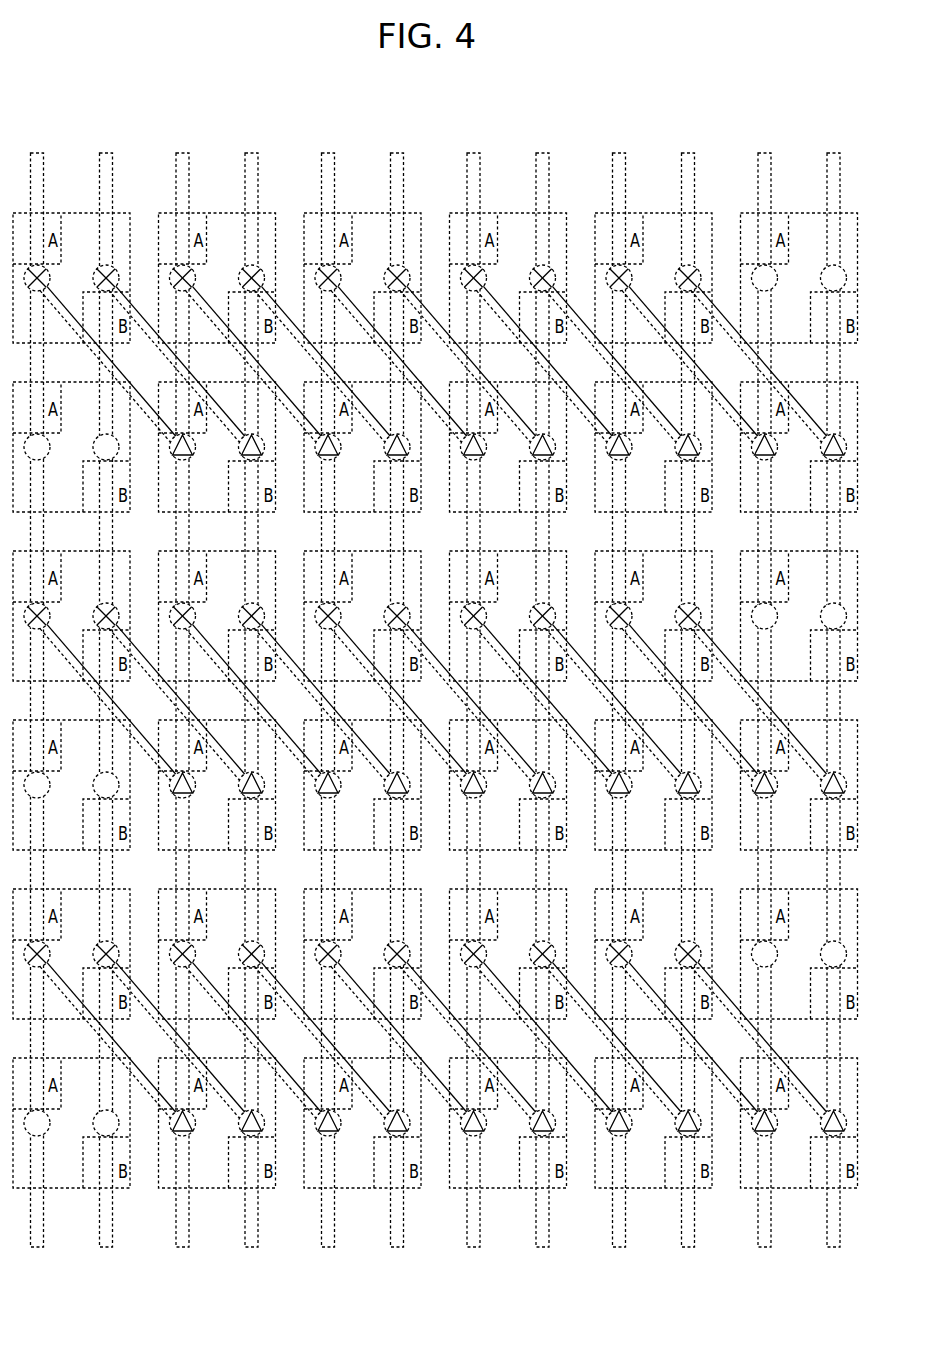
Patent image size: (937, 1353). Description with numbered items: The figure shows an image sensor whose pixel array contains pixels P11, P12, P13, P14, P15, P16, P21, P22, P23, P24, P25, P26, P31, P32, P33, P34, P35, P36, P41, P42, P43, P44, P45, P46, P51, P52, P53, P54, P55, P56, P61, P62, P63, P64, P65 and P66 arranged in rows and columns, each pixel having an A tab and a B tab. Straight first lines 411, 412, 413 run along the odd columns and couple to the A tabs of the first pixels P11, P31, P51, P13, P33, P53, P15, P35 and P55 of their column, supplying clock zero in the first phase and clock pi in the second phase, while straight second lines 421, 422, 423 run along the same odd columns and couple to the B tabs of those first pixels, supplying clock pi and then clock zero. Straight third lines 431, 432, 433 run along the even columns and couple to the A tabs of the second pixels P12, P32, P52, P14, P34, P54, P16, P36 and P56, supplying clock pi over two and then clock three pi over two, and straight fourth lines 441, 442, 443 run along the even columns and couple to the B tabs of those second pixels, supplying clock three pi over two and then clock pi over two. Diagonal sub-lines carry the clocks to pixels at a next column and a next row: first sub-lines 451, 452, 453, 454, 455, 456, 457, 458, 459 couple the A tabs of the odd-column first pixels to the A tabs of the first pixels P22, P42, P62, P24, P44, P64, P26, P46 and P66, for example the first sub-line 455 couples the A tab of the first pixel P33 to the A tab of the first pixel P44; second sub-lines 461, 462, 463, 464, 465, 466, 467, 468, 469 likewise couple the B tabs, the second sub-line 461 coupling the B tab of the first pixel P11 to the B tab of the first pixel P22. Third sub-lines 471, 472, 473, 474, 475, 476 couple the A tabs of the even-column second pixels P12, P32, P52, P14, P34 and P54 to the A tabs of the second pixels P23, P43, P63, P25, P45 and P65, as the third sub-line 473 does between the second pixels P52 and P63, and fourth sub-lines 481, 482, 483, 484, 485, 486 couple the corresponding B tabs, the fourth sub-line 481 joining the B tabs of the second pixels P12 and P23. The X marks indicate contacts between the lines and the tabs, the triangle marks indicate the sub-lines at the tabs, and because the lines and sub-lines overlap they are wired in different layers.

The first line 411 is at (37, 153).
The first line 412 is at (328, 153).
The first line 413 is at (619, 153).
The second line 421 is at (106, 153).
The second line 422 is at (397, 153).
The second line 423 is at (688, 153).
The third line 431 is at (182, 153).
The third line 432 is at (474, 153).
The third line 433 is at (764, 153).
The fourth line 441 is at (252, 153).
The fourth line 442 is at (542, 153).
The fourth line 443 is at (834, 153).
The first sub-line 451 is at (108, 347).
The first sub-line 452 is at (108, 685).
The first sub-line 453 is at (108, 1023).
The first sub-line 454 is at (399, 347).
The first sub-line 455 is at (399, 685).
The first sub-line 456 is at (399, 1023).
The first sub-line 457 is at (690, 347).
The first sub-line 458 is at (690, 685).
The first sub-line 459 is at (690, 1023).
The second sub-line 461 is at (177, 347).
The second sub-line 462 is at (177, 685).
The second sub-line 463 is at (177, 1023).
The second sub-line 464 is at (468, 347).
The second sub-line 465 is at (468, 685).
The second sub-line 466 is at (468, 1023).
The second sub-line 467 is at (759, 347).
The second sub-line 468 is at (759, 685).
The second sub-line 469 is at (759, 1023).
The third sub-line 471 is at (254, 347).
The third sub-line 472 is at (254, 685).
The third sub-line 473 is at (254, 1023).
The third sub-line 474 is at (545, 347).
The third sub-line 475 is at (545, 685).
The third sub-line 476 is at (545, 1023).
The fourth sub-line 481 is at (323, 347).
The fourth sub-line 482 is at (323, 685).
The fourth sub-line 483 is at (323, 1023).
The fourth sub-line 484 is at (614, 347).
The fourth sub-line 485 is at (614, 685).
The fourth sub-line 486 is at (614, 1023).
The first pixel P11 is at (71, 260).
The second pixel P12 is at (217, 260).
The first pixel P13 is at (362, 260).
The second pixel P14 is at (508, 260).
The first pixel P15 is at (653, 260).
The second pixel P16 is at (799, 260).
The pixel P21 is at (71, 429).
The first pixel P22 is at (217, 429).
The second pixel P23 is at (362, 429).
The first pixel P24 is at (508, 429).
The second pixel P25 is at (653, 429).
The first pixel P26 is at (799, 429).
The first pixel P31 is at (71, 598).
The second pixel P32 is at (217, 598).
The first pixel P33 is at (362, 598).
The second pixel P34 is at (508, 598).
The first pixel P35 is at (653, 598).
The second pixel P36 is at (799, 598).
The pixel P41 is at (71, 767).
The first pixel P42 is at (217, 767).
The second pixel P43 is at (362, 767).
The first pixel P44 is at (508, 767).
The second pixel P45 is at (653, 767).
The first pixel P46 is at (799, 767).
The first pixel P51 is at (71, 936).
The second pixel P52 is at (217, 936).
The first pixel P53 is at (362, 936).
The second pixel P54 is at (508, 936).
The first pixel P55 is at (653, 936).
The second pixel P56 is at (799, 936).
The pixel P61 is at (71, 1105).
The first pixel P62 is at (217, 1105).
The second pixel P63 is at (362, 1105).
The first pixel P64 is at (508, 1105).
The second pixel P65 is at (653, 1105).
The first pixel P66 is at (799, 1105).